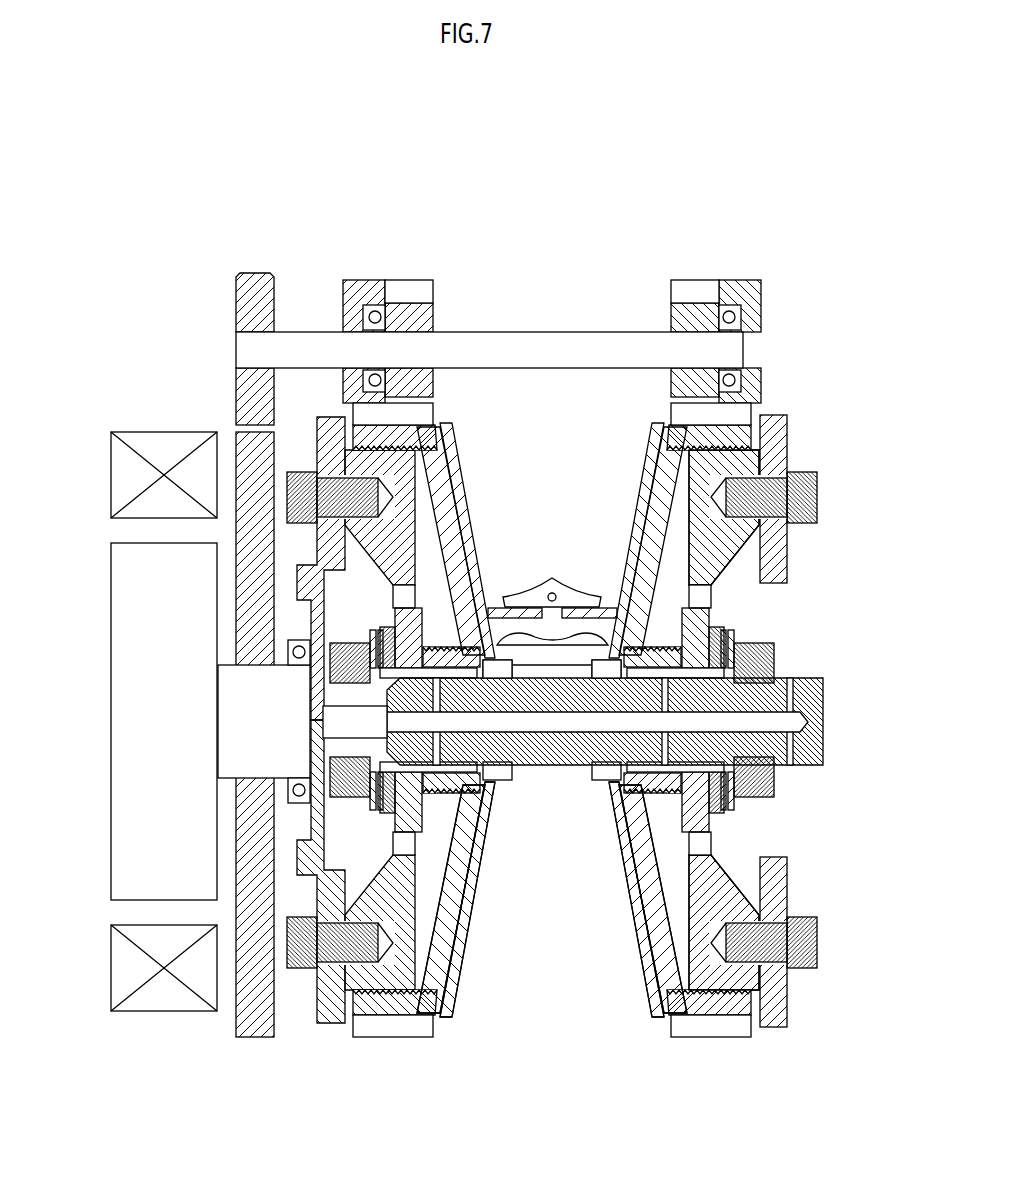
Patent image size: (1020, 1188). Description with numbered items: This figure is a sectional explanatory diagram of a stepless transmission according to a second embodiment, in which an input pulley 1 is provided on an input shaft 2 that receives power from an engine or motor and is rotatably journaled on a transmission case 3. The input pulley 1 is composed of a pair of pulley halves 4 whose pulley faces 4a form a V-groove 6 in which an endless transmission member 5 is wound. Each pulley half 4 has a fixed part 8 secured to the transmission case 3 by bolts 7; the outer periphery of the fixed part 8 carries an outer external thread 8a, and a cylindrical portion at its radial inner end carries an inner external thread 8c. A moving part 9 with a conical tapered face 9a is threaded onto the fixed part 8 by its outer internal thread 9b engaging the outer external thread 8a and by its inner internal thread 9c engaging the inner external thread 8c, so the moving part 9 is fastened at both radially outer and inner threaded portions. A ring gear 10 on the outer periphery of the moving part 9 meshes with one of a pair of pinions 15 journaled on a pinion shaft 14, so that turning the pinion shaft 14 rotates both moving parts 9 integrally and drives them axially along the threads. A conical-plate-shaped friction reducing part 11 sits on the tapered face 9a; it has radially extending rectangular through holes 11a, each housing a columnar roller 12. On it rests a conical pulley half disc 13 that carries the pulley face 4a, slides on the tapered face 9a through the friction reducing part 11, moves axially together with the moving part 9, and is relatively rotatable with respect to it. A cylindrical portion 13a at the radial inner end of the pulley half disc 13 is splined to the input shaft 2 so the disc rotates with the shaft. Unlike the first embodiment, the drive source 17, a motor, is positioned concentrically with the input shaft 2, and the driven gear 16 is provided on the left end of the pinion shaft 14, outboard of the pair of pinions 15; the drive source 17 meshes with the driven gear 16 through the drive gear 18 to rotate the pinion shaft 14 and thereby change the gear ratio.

The input pulley 1 is at (568, 216).
The input shaft 2 is at (812, 678).
The transmission case 3 is at (787, 540).
The pulley half 4 is at (362, 1058).
The pulley face 4a is at (473, 523).
The endless transmission member 5 is at (540, 585).
The V-groove 6 is at (535, 468).
The bolt 7 is at (817, 497).
The fixed part 8 is at (780, 420).
The outer external thread 8a is at (398, 1030).
The inner external thread 8c is at (470, 790).
The moving part 9 is at (650, 425).
The tapered face 9a is at (485, 870).
The outer internal thread 9b is at (790, 980).
The inner internal thread 9c is at (677, 753).
The ring gear 10 is at (363, 410).
The friction reducing part 11 is at (476, 905).
The through hole 11a is at (462, 963).
The columnar roller 12 is at (650, 942).
The pulley half disc 13 is at (487, 853).
The cylindrical portion 13a is at (601, 790).
The pinion shaft 14 is at (510, 330).
The pinion 15 is at (393, 278).
The driven gear 16 is at (255, 280).
The drive source 17 is at (151, 424).
The drive gear 18 is at (257, 455).